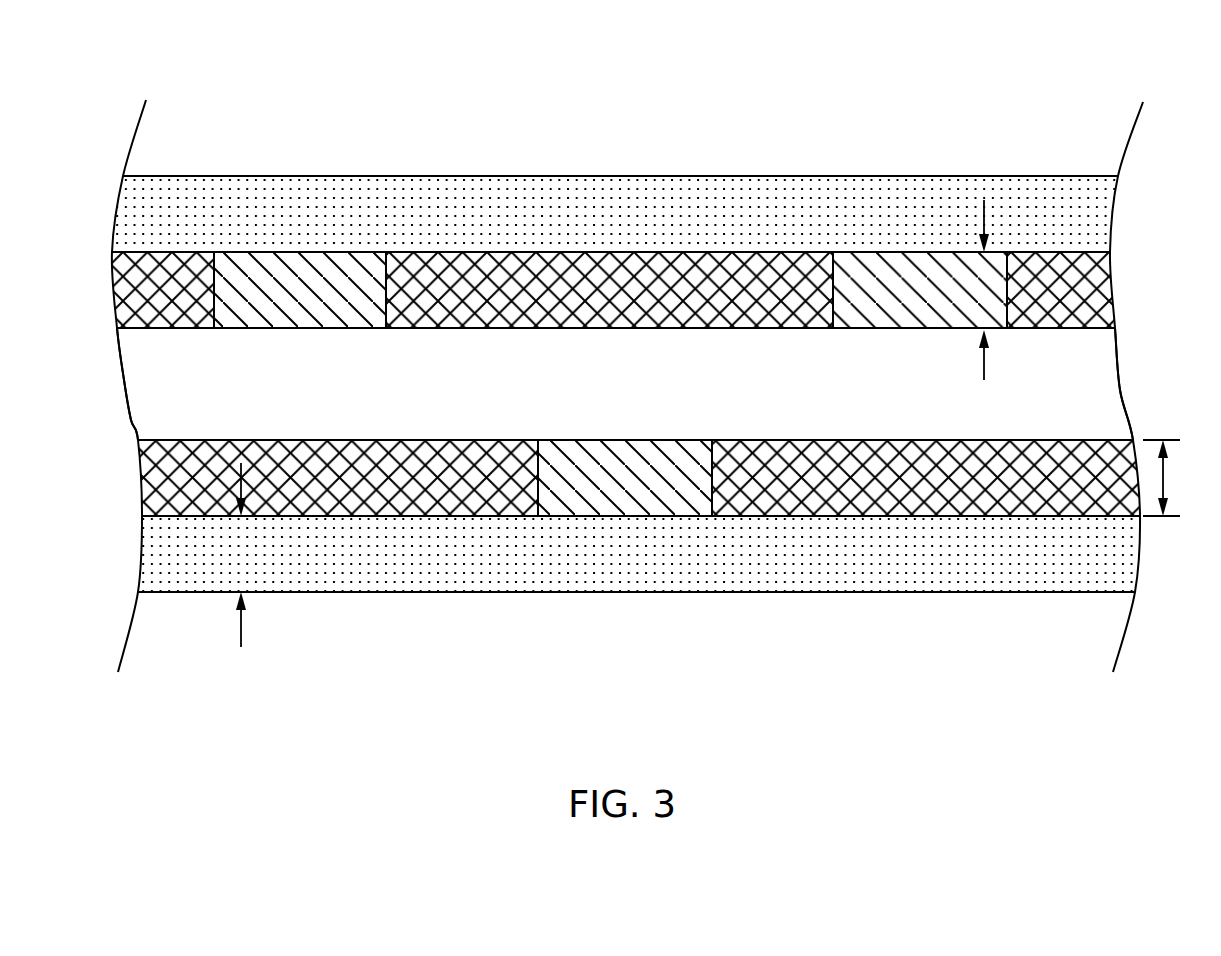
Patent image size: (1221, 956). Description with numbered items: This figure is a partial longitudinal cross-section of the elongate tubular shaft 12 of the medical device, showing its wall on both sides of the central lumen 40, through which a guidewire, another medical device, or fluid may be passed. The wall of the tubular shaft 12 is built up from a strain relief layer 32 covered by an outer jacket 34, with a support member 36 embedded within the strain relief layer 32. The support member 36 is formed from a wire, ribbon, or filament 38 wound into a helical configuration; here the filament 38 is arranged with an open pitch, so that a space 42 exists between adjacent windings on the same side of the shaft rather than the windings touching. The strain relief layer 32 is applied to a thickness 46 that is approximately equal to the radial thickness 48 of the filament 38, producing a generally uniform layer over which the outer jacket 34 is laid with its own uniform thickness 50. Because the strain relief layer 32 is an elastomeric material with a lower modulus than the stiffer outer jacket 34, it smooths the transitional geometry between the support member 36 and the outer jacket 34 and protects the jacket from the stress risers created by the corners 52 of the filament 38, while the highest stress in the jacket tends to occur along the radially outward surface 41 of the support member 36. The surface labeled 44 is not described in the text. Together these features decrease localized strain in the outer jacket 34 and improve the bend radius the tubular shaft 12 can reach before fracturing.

The elongate tubular shaft 12 is at (790, 105).
The strain relief layer 32 is at (585, 263).
The outer jacket 34 is at (1058, 187).
The support member 36 is at (342, 328).
The filament 38 is at (248, 316).
The lumen 40 is at (1107, 390).
The radially outward surface 41 is at (298, 328).
The space 42 is at (832, 333).
The top surface of lower layer 44 is at (362, 440).
The thickness of the strain relief layer 46 is at (1171, 478).
The thickness of the filament 48 is at (1000, 298).
The uniform thickness of the outer jacket 50 is at (256, 561).
The corners 52 is at (833, 252).